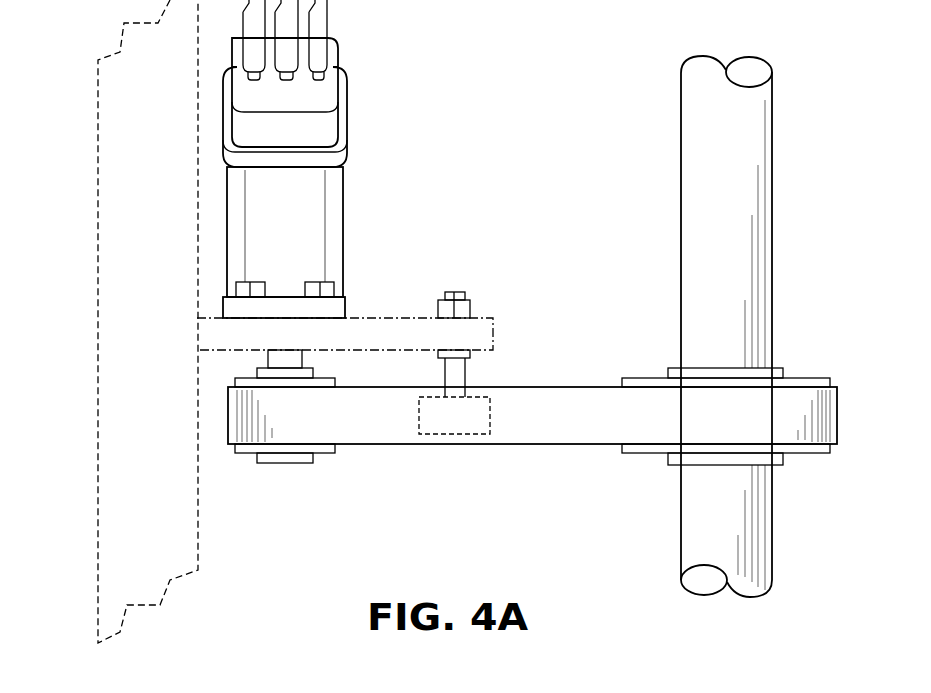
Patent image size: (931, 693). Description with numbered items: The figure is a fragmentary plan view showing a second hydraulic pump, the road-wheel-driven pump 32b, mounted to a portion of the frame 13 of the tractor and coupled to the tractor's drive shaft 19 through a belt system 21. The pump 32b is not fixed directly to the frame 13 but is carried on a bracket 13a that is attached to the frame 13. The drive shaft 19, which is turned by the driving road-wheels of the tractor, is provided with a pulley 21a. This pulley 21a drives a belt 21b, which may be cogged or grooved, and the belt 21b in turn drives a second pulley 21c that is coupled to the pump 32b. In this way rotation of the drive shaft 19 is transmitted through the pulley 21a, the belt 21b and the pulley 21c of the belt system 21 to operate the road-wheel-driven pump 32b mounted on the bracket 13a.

The frame 13 is at (98, 353).
The bracket 13a is at (495, 330).
The road-wheel-driven pump 32b is at (340, 50).
The drive shaft 19 is at (772, 222).
The belt system 21 is at (532, 409).
The pulley 21a is at (812, 378).
The belt 21b is at (552, 445).
The pulley 21c is at (243, 457).